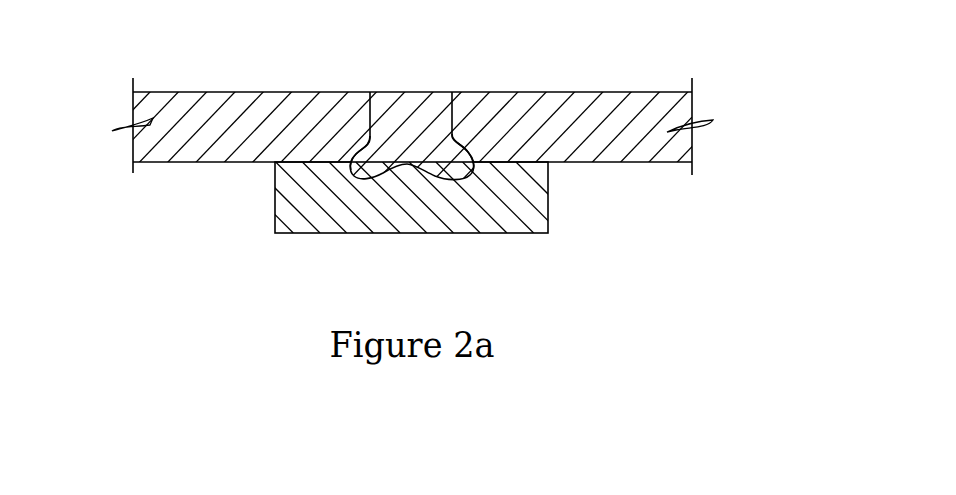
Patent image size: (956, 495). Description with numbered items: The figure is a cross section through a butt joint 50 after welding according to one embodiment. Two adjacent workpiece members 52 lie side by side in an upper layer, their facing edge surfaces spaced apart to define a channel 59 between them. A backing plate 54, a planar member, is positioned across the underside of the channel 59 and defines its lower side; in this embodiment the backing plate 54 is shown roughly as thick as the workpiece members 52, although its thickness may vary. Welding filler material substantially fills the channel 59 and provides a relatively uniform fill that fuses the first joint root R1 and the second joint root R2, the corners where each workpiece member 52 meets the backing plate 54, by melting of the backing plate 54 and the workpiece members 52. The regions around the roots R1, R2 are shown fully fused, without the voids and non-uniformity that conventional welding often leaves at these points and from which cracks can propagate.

The butt joint 50 is at (357, 86).
The workpiece members 52 is at (223, 145).
The backing plate 54 is at (340, 218).
The channel 59 is at (440, 118).
The first joint root R1 is at (484, 148).
The second joint root R2 is at (339, 149).